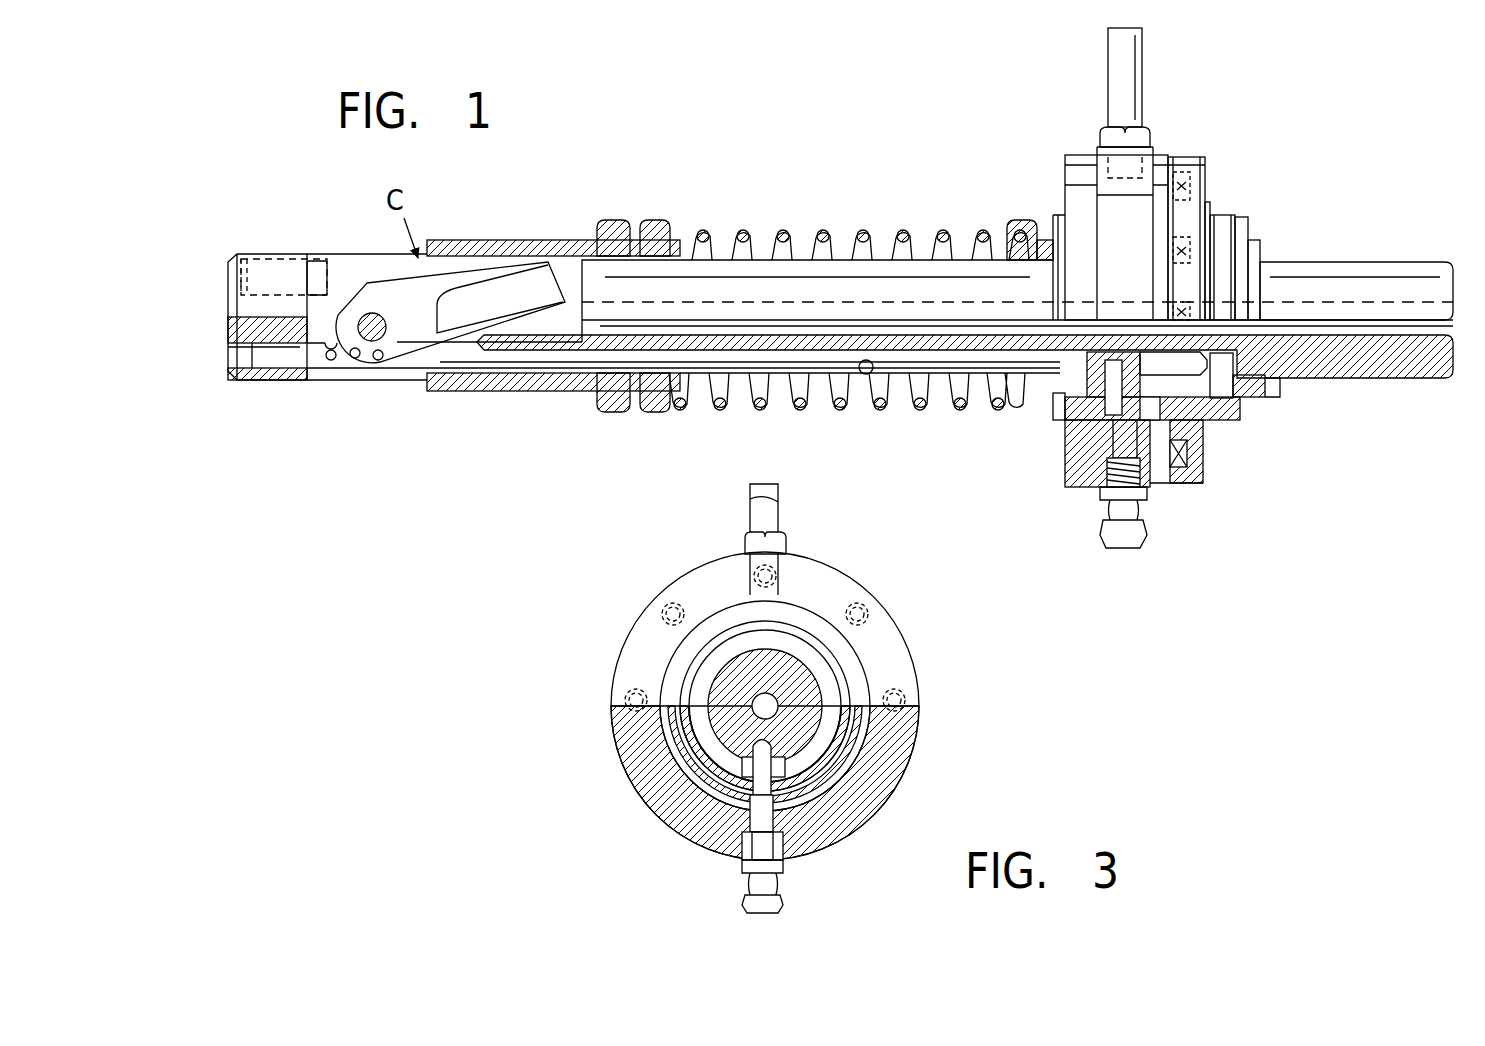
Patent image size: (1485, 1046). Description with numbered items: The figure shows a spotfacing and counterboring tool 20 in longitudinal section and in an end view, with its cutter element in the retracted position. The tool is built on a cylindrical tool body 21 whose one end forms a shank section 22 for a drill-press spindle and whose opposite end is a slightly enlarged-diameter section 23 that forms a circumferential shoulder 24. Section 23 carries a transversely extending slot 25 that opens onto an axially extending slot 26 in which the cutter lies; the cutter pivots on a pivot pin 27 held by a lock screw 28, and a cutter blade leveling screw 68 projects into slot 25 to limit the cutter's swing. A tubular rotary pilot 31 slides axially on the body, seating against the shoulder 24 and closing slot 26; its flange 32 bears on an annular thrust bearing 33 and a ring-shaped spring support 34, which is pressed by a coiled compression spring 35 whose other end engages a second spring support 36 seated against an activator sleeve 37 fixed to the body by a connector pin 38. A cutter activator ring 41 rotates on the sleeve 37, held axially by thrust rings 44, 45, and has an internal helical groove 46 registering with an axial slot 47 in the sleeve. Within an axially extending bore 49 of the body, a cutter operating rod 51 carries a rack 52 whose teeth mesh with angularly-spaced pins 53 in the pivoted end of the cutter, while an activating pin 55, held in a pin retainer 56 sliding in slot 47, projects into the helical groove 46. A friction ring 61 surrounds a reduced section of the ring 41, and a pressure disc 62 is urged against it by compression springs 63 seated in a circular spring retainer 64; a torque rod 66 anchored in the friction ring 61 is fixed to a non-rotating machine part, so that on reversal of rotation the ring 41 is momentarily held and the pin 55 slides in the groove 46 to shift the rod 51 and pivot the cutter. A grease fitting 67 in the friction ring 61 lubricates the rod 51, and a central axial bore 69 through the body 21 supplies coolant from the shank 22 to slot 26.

In FIG. 1, the spotfacing and counterboring tool 20 is at (784, 182).
In FIG. 3, the spotfacing and counterboring tool 20 is at (571, 648).
In FIG. 1, the cylindrical tool body 21 is at (876, 262).
In FIG. 3, the cylindrical tool body 21 is at (818, 690).
In FIG. 1, the shank section 22 is at (1341, 262).
In FIG. 1, the enlarged-diameter section 23 is at (242, 254).
In FIG. 1, the circumferential shoulder 24 is at (440, 392).
In FIG. 1, the transversely extending slot 25 is at (336, 262).
In FIG. 1, the axially extending slot 26 is at (542, 335).
In FIG. 1, the pivot pin 27 is at (368, 313).
In FIG. 1, the lock screw 28 is at (230, 332).
In FIG. 1, the tubular rotary pilot 31 is at (466, 240).
In FIG. 1, the circumferential flange 32 is at (611, 221).
In FIG. 1, the annular thrust bearing 33 is at (630, 413).
In FIG. 1, the ring-shaped spring support 34 is at (650, 222).
In FIG. 1, the coiled compression spring 35 is at (795, 412).
In FIG. 1, the ring-shaped spring support 36 is at (1024, 228).
In FIG. 1, the activator sleeve 37 is at (1263, 390).
In FIG. 3, the activator sleeve 37 is at (886, 744).
In FIG. 1, the connector pin 38 is at (1256, 399).
In FIG. 1, the cutter activator ring 41 is at (1068, 158).
In FIG. 3, the cutter activator ring 41 is at (890, 813).
In FIG. 1, the thrust ring 44 is at (1057, 418).
In FIG. 1, the thrust ring 45 is at (1241, 421).
In FIG. 1, the helical groove 46 is at (1203, 455).
In FIG. 3, the helical groove 46 is at (700, 745).
In FIG. 1, the axially extending slot 47 is at (1234, 428).
In FIG. 1, the axially extending bore 49 is at (866, 375).
In FIG. 1, the cutter operating rod 51 is at (743, 365).
In FIG. 3, the cutter operating rod 51 is at (758, 752).
In FIG. 1, the rack 52 is at (333, 360).
In FIG. 1, the angularly-spaced pins 53 is at (378, 359).
In FIG. 1, the activating pin 55 is at (1060, 422).
In FIG. 3, the activating pin 55 is at (762, 795).
In FIG. 1, the pin retainer 56 is at (1057, 413).
In FIG. 3, the pin retainer 56 is at (838, 834).
In FIG. 1, the friction ring 61 is at (1097, 487).
In FIG. 3, the friction ring 61 is at (872, 840).
In FIG. 1, the pressure disc 62 is at (1160, 155).
In FIG. 1, the compression springs 63 is at (1200, 176).
In FIG. 3, the compression springs 63 is at (782, 584).
In FIG. 1, the circular spring retainer 64 is at (1183, 485).
In FIG. 1, the torque rod 66 is at (1135, 60).
In FIG. 3, the torque rod 66 is at (779, 518).
In FIG. 1, the grease fitting 67 is at (1143, 538).
In FIG. 3, the grease fitting 67 is at (742, 900).
In FIG. 1, the cutter blade leveling screw 68 is at (230, 280).
In FIG. 1, the axial central bore 69 is at (1446, 335).
In FIG. 3, the axial central bore 69 is at (780, 714).